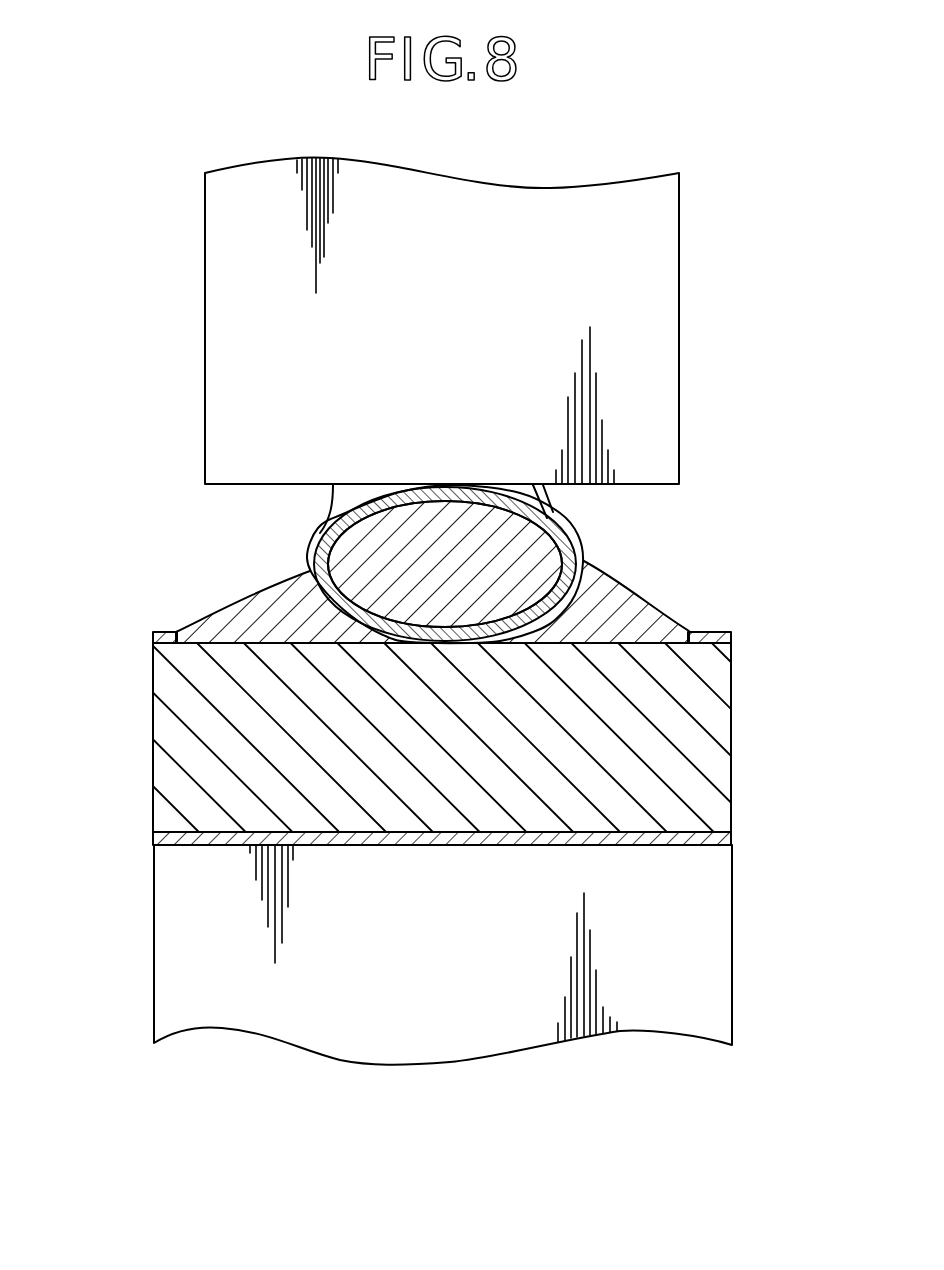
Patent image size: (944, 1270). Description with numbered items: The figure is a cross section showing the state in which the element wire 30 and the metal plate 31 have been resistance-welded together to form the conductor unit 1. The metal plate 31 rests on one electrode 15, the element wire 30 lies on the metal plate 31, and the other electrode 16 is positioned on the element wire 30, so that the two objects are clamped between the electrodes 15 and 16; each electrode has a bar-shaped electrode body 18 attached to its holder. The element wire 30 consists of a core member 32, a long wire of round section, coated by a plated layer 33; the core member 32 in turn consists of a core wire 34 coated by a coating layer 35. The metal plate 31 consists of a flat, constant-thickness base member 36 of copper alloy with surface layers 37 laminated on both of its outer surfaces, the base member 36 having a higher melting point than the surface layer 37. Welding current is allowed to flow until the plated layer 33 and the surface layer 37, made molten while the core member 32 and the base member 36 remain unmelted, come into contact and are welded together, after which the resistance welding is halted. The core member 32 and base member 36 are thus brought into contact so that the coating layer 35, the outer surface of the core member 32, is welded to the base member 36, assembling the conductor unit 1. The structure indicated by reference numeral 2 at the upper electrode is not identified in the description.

The conductor unit 1 is at (456, 626).
The electronic component 2 is at (468, 607).
The electrode 15 is at (733, 947).
The electrode 16 is at (680, 363).
The electrode body 18 is at (620, 290).
The element wire 30 is at (562, 508).
The metal plate 31 is at (456, 738).
The core member 32 is at (368, 564).
The plated layer 33 is at (584, 564).
The core wire 34 is at (379, 547).
The coating layer 35 is at (332, 580).
The base member 36 is at (718, 738).
The surface layer 37 is at (153, 830).